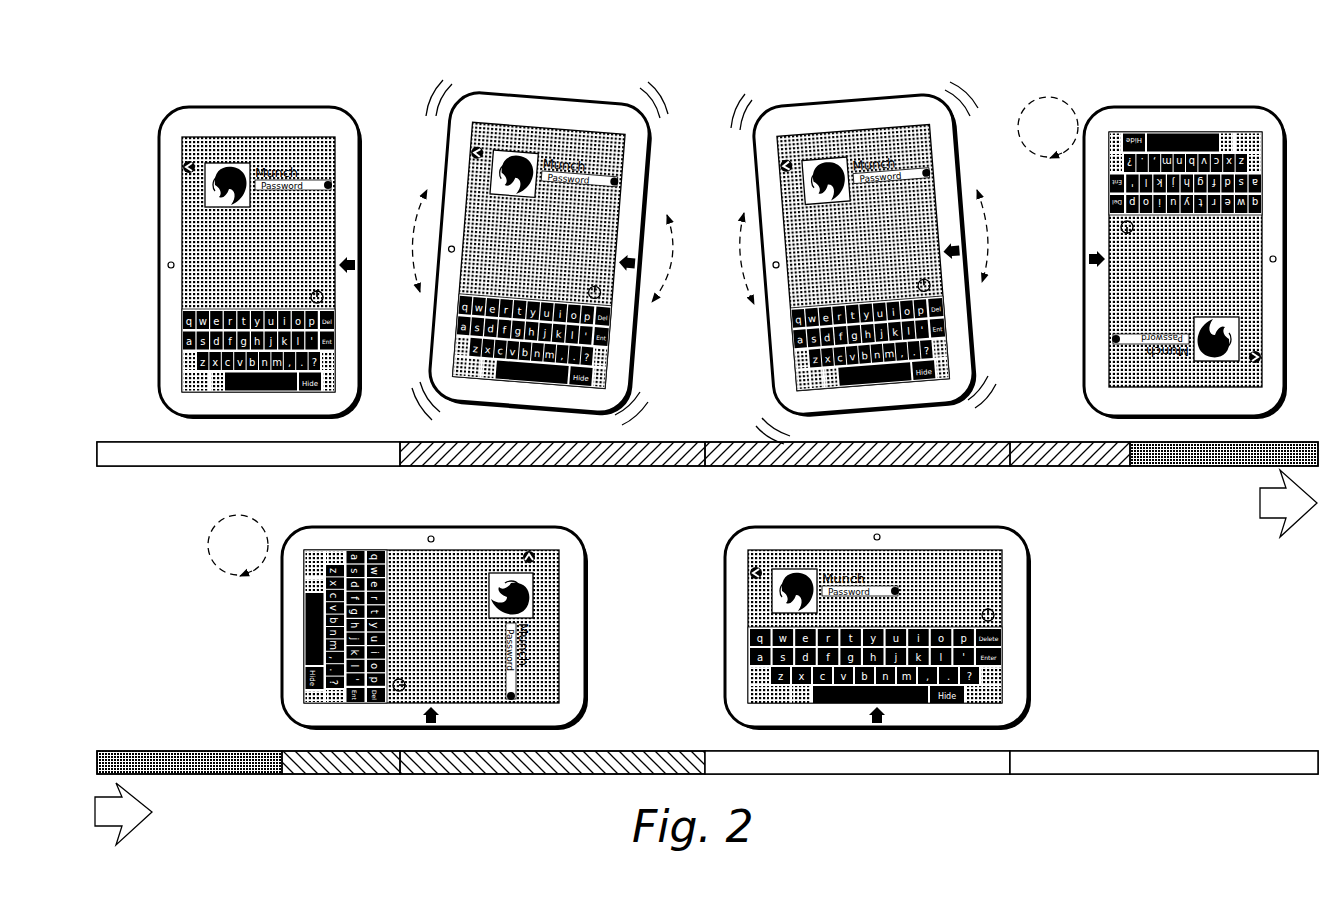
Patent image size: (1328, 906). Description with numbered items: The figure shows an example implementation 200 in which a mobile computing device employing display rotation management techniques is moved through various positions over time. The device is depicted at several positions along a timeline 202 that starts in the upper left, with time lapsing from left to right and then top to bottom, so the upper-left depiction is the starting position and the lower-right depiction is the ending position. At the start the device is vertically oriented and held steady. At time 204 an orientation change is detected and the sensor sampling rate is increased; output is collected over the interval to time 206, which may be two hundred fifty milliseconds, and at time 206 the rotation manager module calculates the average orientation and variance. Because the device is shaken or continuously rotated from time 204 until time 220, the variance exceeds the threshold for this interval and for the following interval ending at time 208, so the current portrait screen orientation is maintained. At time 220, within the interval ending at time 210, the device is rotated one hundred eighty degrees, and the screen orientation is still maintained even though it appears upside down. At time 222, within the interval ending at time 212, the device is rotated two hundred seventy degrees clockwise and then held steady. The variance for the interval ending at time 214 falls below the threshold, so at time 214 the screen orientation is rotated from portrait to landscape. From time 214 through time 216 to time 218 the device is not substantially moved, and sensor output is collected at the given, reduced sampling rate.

The example implementation 200 is at (190, 90).
The timeline 202 is at (188, 448).
The time 204 is at (398, 468).
The time 206 is at (703, 468).
The time 208 is at (1008, 468).
The time 220 is at (1128, 468).
The time 210 is at (1313, 471).
The time 222 is at (284, 776).
The time 212 is at (402, 776).
The time 214 is at (703, 749).
The time 216 is at (1012, 776).
The time 218 is at (1315, 749).